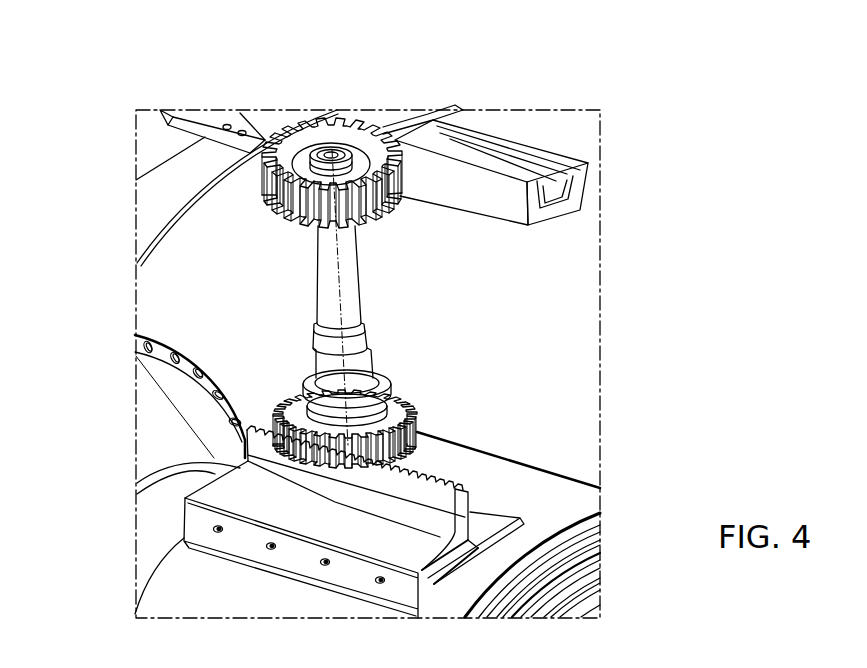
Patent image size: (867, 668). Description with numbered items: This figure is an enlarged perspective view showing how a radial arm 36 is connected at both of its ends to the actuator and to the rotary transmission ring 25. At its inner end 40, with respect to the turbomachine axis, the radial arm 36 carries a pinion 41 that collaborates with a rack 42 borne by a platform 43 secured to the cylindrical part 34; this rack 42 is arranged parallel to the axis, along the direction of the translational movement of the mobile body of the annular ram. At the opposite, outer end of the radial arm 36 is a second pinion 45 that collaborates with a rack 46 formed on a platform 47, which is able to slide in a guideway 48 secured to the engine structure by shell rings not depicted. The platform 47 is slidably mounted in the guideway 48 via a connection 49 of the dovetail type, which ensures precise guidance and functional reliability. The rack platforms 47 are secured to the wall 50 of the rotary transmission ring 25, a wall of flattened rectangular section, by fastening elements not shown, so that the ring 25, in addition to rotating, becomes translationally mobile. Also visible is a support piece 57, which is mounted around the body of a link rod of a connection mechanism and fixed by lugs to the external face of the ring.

The rotary transmission ring 25 is at (133, 217).
The cylindrical part 34 is at (200, 591).
The radial arm 36 is at (318, 270).
The inner end 40 is at (413, 398).
The pinion 41 is at (420, 443).
The rack 42 is at (462, 490).
The platform 43 is at (435, 585).
The pinion 45 is at (263, 198).
The rack 46 is at (344, 112).
The platform 47 is at (415, 117).
The guideway 48 is at (533, 130).
The connection 49 is at (588, 175).
The wall 50 is at (213, 157).
The support piece 57 is at (161, 112).